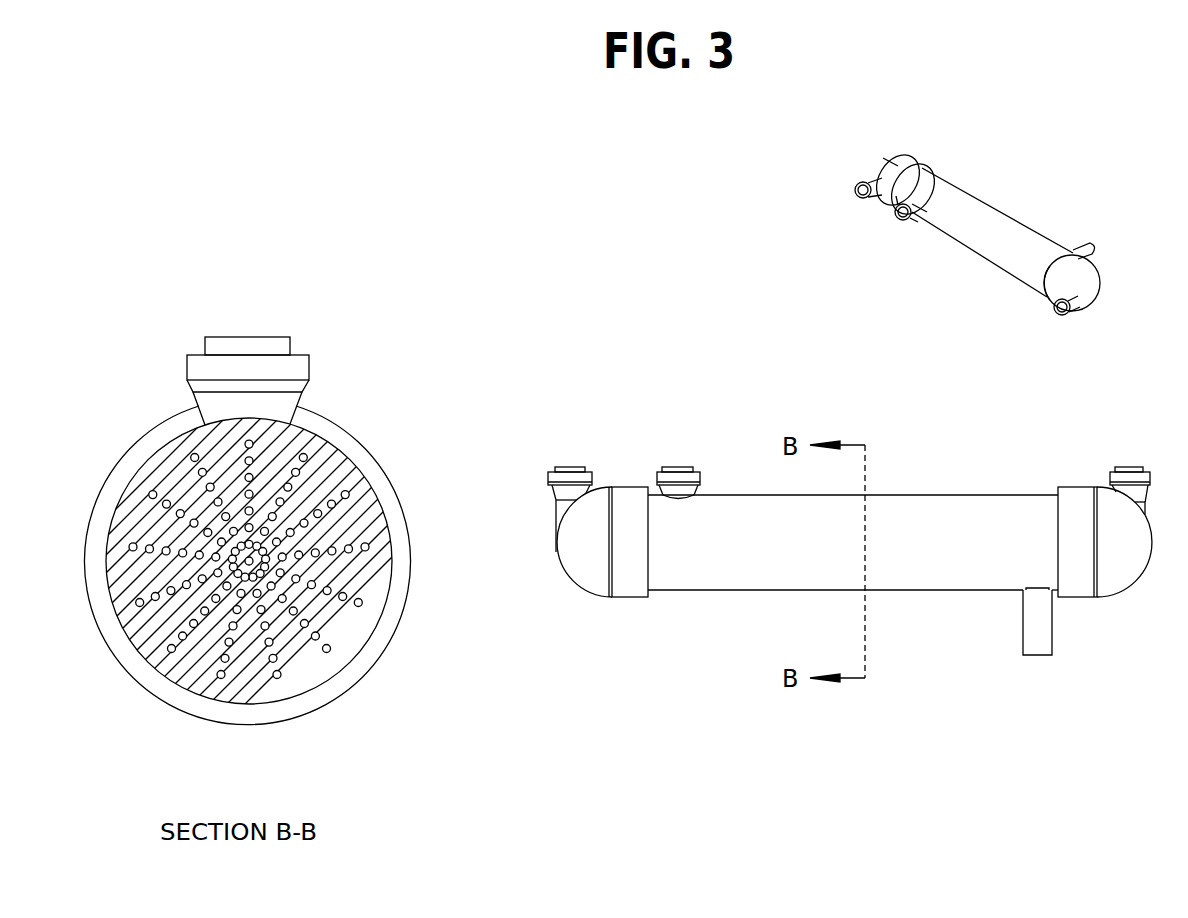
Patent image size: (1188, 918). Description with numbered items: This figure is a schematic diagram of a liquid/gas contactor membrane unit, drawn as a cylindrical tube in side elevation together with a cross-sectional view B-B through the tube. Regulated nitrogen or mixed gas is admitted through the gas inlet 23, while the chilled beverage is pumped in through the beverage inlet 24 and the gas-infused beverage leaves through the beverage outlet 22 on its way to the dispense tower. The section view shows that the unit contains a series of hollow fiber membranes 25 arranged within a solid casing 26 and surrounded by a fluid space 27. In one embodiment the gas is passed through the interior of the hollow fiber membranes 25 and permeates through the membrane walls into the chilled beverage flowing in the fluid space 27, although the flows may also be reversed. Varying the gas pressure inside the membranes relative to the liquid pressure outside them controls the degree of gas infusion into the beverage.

The beverage outlet 22 is at (567, 456).
The gas inlet 23 is at (678, 456).
The beverage inlet 24 is at (1130, 456).
The hollow fiber membranes 25 is at (336, 654).
The solid casing 26 is at (393, 613).
The fluid space 27 is at (302, 673).